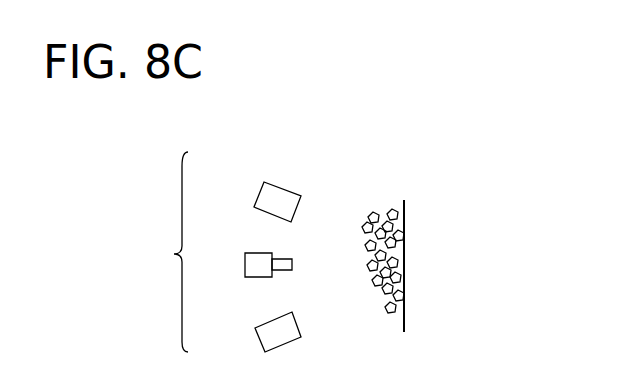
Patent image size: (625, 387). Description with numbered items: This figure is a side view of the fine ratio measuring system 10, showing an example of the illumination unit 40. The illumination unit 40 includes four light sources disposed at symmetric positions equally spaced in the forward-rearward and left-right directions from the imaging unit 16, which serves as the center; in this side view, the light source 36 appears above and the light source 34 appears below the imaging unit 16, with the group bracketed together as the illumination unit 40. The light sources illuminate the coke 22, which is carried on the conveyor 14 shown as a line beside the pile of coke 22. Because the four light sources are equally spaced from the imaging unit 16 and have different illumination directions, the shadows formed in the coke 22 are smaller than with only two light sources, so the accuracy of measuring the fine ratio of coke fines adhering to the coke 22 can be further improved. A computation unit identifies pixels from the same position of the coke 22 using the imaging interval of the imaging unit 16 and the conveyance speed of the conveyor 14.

The fine ratio measuring system 10 is at (136, 167).
The illumination unit 40 is at (166, 252).
The light source 36 is at (263, 187).
The imaging unit 16 is at (278, 272).
The light source 34 is at (255, 328).
The coke 22 is at (373, 208).
The conveyor 14 is at (405, 318).